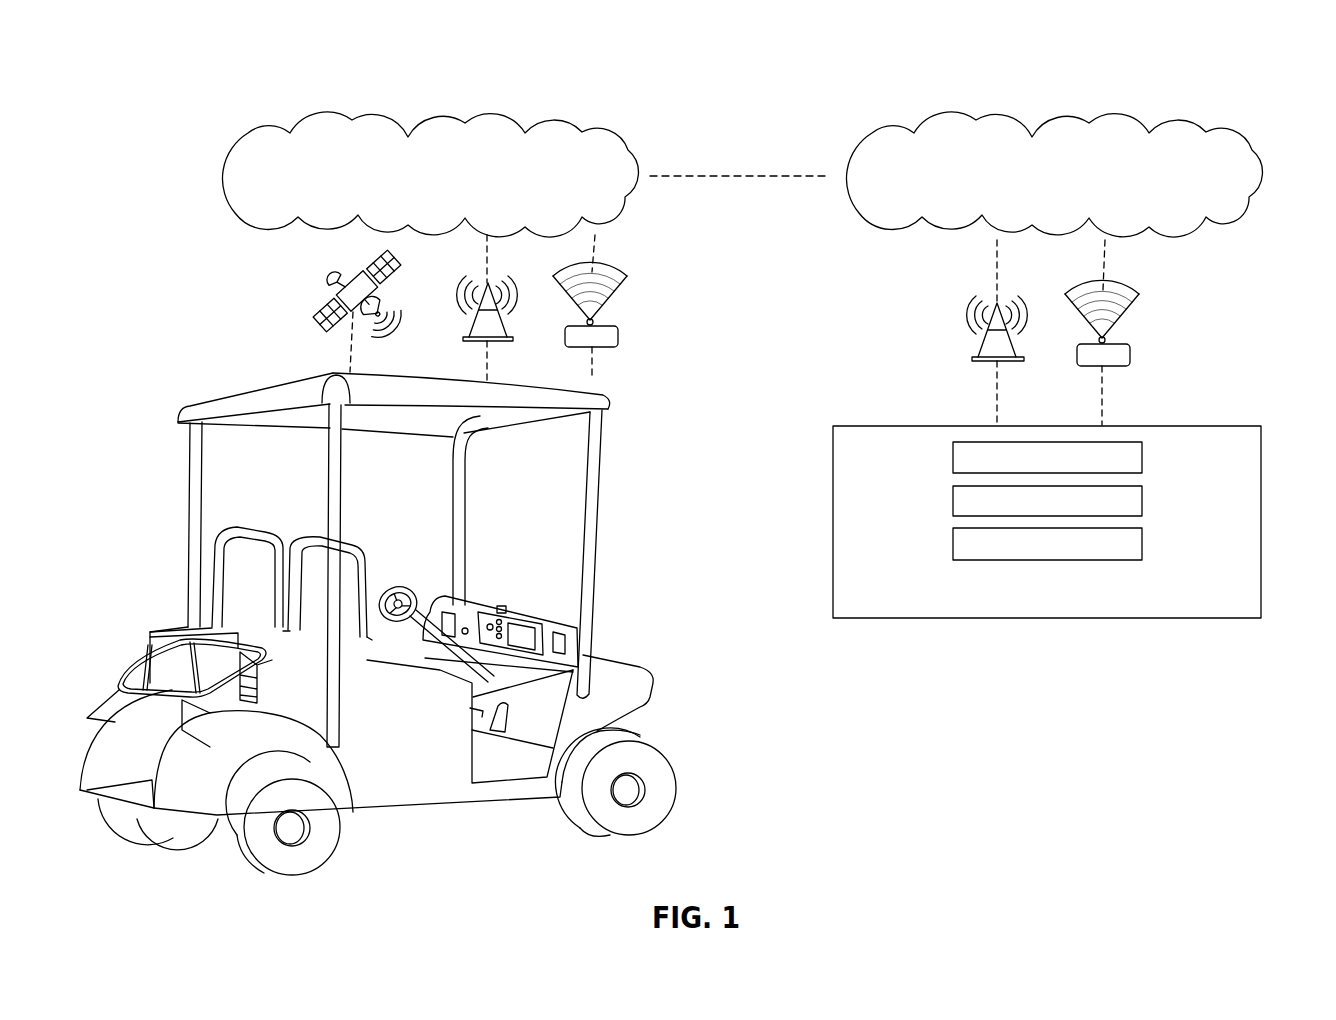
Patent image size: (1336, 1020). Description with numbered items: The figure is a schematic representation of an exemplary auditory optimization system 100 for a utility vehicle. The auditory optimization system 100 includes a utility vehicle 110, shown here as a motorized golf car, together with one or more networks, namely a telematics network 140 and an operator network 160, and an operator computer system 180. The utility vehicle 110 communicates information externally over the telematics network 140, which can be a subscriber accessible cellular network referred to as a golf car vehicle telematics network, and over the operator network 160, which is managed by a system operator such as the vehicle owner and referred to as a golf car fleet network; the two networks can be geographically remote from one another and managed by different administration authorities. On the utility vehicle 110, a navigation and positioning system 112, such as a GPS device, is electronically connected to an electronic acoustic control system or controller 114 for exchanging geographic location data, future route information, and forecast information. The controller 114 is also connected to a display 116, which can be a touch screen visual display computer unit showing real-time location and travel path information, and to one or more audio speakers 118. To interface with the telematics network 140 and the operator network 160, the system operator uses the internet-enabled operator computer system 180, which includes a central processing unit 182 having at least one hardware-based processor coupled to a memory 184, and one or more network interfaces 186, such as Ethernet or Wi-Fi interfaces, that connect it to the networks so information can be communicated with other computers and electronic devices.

The auditory optimization system 100 is at (196, 150).
The utility vehicle 110 is at (183, 557).
The navigation and positioning system (NPS) 112 is at (500, 607).
The electronic acoustic control system (controller) 114 is at (520, 625).
The display 116 is at (532, 623).
The audio speakers 118 is at (447, 612).
The telematics network 140 is at (553, 121).
The operator network 160 is at (1178, 121).
The operator computer system 180 is at (1077, 488).
The central processing unit (CPU) 182 is at (1142, 457).
The memory 184 is at (1142, 501).
The network interfaces 186 is at (1142, 544).